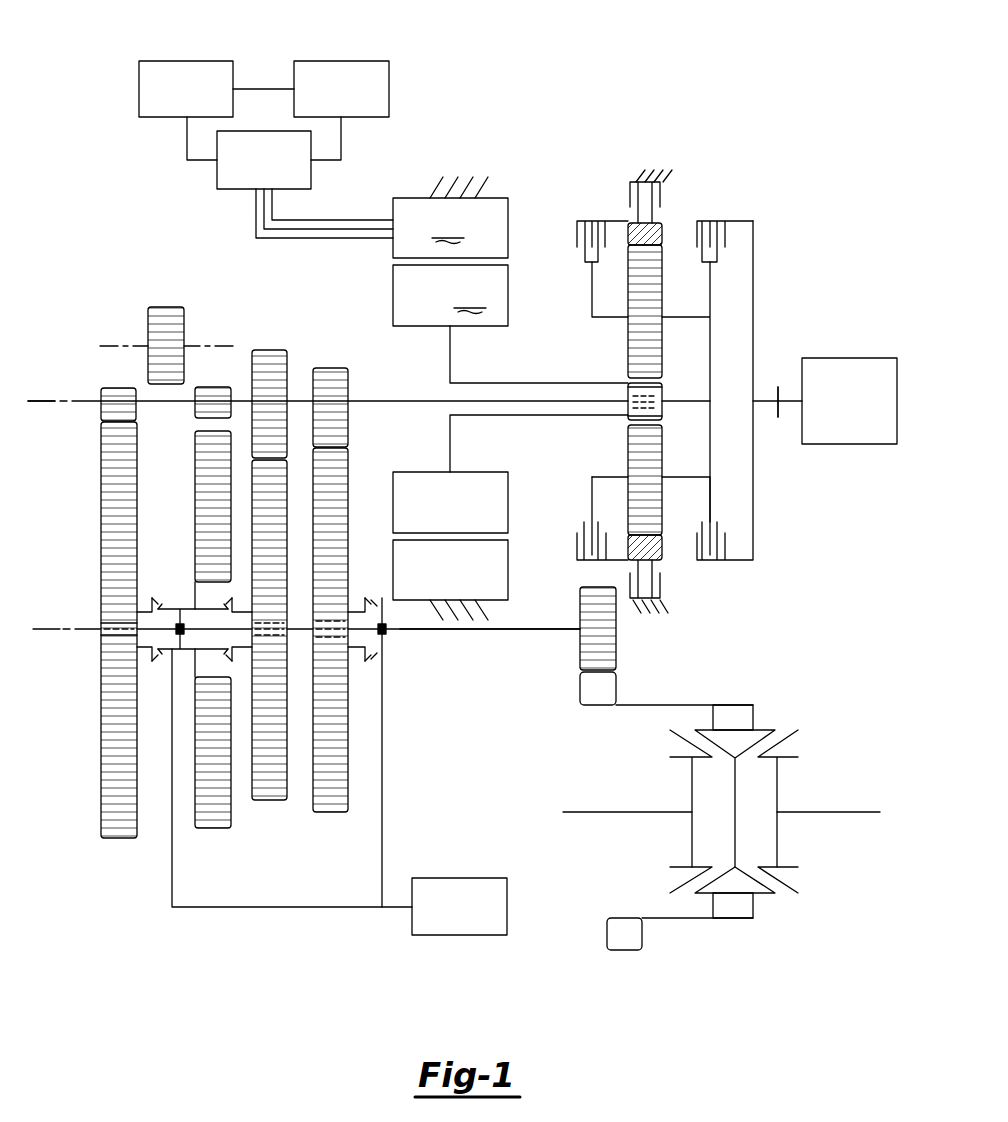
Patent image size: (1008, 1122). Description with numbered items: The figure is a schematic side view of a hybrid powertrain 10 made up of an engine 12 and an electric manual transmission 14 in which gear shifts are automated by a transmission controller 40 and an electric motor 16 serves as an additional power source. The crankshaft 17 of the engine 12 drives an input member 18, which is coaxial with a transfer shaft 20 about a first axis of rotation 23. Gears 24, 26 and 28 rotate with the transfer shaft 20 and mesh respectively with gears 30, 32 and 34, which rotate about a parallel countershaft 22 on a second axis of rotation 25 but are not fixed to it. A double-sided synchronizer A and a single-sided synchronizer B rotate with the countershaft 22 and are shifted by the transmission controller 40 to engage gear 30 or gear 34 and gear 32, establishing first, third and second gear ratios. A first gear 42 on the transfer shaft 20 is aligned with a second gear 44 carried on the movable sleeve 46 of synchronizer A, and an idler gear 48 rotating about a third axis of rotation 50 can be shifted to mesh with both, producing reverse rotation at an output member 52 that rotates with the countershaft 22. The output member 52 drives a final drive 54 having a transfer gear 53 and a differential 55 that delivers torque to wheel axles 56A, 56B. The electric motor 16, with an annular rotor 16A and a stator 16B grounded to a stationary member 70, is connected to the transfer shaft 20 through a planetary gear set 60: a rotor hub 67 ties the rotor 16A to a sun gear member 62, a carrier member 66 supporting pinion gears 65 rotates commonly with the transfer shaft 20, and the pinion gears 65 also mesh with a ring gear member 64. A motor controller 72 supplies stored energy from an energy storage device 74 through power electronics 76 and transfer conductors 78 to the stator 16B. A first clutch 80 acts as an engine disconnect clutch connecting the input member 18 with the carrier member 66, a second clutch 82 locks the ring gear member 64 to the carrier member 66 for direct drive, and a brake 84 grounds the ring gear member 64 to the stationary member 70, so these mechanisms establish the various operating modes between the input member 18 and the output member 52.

The hybrid powertrain 10 is at (782, 196).
The engine 12 is at (850, 358).
The electric manual transmission 14 is at (699, 366).
The electric motor 16 is at (481, 375).
The rotor 16A is at (450, 295).
The stator 16B is at (450, 228).
The crankshaft 17 is at (785, 418).
The input member 18 is at (768, 401).
The transfer shaft 20 is at (383, 401).
The countershaft 22 is at (490, 630).
The first axis of rotation 23 is at (42, 400).
The gear 24 is at (108, 385).
The second axis of rotation 25 is at (53, 629).
The gear 26 is at (331, 368).
The gear 28 is at (270, 350).
The gear 30 is at (100, 466).
The gear 32 is at (349, 492).
The gear 34 is at (287, 508).
The transmission controller 40 is at (461, 878).
The first gear 42 is at (213, 386).
The second gear 44 is at (195, 513).
The movable sleeve 46 is at (168, 655).
The idler gear 48 is at (148, 320).
The third axis of rotation 50 is at (105, 345).
The output member 52 is at (616, 630).
The transfer gear 53 is at (580, 690).
The final drive 54 is at (733, 811).
The differential 55 is at (775, 893).
The wheel axle 56A is at (607, 812).
The wheel axle 56B is at (848, 812).
The planetary gear set 60 is at (664, 547).
The sun gear member 62 is at (628, 418).
The ring gear member 64 is at (666, 224).
The pinion gears 65 is at (664, 342).
The carrier member 66 is at (615, 318).
The rotor hub 67 is at (450, 355).
The stationary member 70 is at (438, 188).
The motor controller 72 is at (342, 61).
The energy storage device 74 is at (189, 61).
The power electronics 76 is at (217, 180).
The transfer conductors 78 is at (343, 219).
The first clutch 80 is at (728, 262).
The second clutch 82 is at (577, 262).
The brake 84 is at (664, 188).
The double-sided synchronizer A is at (180, 591).
The single-sided synchronizer B is at (395, 644).